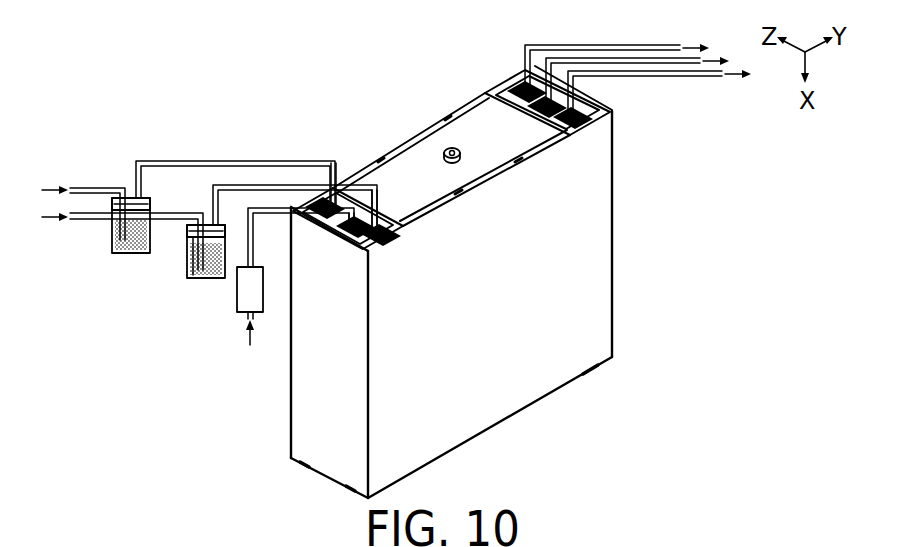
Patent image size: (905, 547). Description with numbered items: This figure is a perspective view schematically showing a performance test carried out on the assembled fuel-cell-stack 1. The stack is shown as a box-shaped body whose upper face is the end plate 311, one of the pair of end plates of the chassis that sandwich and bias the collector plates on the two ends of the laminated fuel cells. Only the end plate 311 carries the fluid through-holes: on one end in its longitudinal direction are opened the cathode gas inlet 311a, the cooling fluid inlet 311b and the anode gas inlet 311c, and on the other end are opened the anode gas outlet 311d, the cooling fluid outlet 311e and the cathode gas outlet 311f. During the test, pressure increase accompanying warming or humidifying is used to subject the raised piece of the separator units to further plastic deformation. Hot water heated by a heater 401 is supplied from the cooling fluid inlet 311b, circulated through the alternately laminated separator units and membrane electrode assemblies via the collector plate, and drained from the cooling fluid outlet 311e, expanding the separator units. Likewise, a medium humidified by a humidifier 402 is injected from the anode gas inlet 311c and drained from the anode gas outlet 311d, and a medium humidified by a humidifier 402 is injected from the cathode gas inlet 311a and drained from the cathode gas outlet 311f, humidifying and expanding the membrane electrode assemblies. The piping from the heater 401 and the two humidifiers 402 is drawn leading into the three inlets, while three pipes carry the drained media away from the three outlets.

The fuel-cell-stack 1 is at (628, 154).
The end plate 311 is at (417, 155).
The cathode gas inlet 311a is at (323, 215).
The cooling fluid inlet 311b is at (347, 227).
The anode gas inlet 311c is at (367, 235).
The anode gas outlet 311d is at (514, 92).
The cooling fluid outlet 311e is at (536, 110).
The cathode gas outlet 311f is at (556, 122).
The heater 401 is at (238, 304).
The humidifier 402 is at (112, 246).